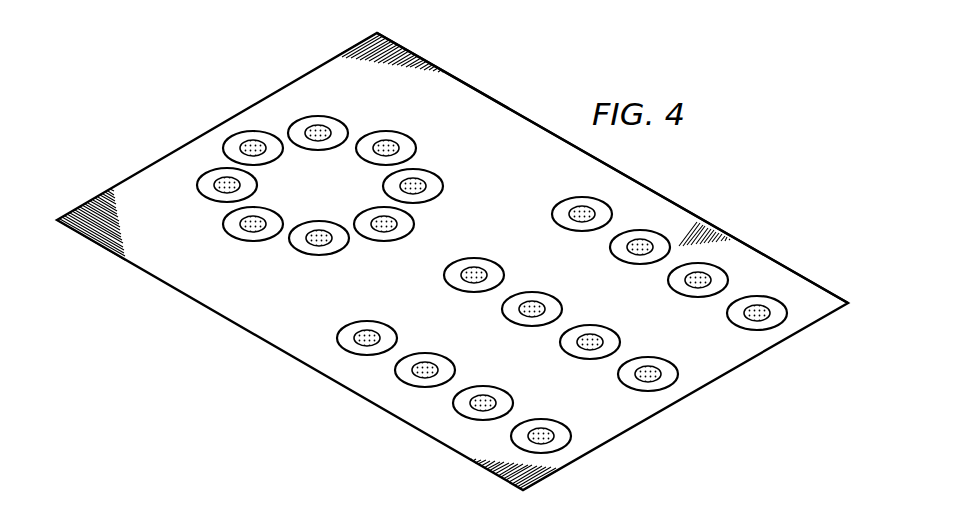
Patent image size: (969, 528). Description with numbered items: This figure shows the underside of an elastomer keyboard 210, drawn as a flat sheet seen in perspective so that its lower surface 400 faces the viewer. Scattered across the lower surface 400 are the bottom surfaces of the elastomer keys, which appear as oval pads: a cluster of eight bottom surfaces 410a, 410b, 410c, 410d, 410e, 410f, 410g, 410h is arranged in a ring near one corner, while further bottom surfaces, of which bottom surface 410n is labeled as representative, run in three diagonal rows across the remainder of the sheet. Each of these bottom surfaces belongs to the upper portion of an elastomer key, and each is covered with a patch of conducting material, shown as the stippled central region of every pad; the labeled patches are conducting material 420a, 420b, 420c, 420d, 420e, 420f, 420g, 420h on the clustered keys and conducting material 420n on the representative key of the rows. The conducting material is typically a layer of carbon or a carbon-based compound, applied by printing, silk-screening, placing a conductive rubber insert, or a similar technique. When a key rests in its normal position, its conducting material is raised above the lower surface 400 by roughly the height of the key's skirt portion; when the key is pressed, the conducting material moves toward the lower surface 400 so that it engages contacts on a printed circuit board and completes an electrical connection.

The lower surface 400 is at (505, 117).
The elastomer keyboard 210 is at (663, 198).
The bottom surface 410a is at (233, 142).
The bottom surface 410b is at (333, 120).
The bottom surface 410c is at (358, 151).
The bottom surface 410d is at (441, 186).
The bottom surface 410e is at (413, 224).
The bottom surface 410f is at (308, 255).
The bottom surface 410g is at (243, 241).
The bottom surface 410h is at (198, 182).
The bottom surface 410n is at (740, 326).
The conducting material 420a is at (248, 140).
The conducting material 420b is at (318, 126).
The conducting material 420c is at (388, 141).
The conducting material 420d is at (420, 178).
The conducting material 420e is at (378, 217).
The conducting material 420f is at (330, 242).
The conducting material 420g is at (265, 222).
The conducting material 420h is at (215, 185).
The conducting material 420n is at (760, 305).